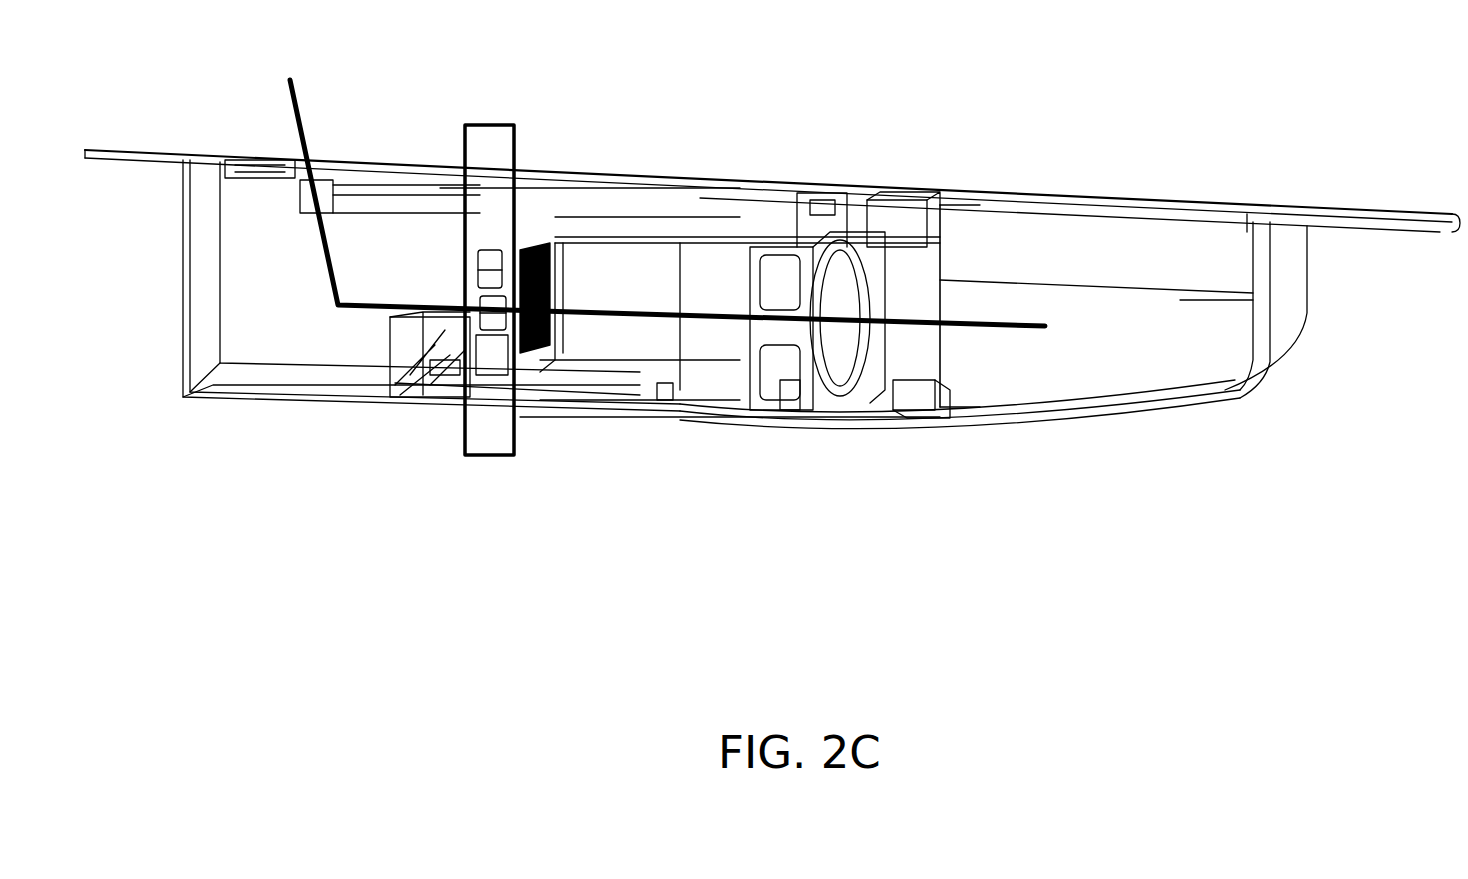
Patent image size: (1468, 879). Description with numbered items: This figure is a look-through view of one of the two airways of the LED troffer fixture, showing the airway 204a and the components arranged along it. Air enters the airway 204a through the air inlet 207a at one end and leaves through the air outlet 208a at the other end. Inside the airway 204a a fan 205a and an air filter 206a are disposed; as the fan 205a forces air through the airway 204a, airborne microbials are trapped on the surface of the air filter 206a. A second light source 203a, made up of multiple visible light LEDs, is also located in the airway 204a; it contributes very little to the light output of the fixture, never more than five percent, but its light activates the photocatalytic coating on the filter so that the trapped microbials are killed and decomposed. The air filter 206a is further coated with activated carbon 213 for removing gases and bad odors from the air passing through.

The air inlet 207a is at (283, 168).
The second light source 203a is at (500, 246).
The air filter 206a is at (522, 252).
The airway 204a is at (1045, 326).
The air outlet 208a is at (1130, 210).
The fan 205a is at (773, 333).
The activated carbon 213 is at (463, 447).